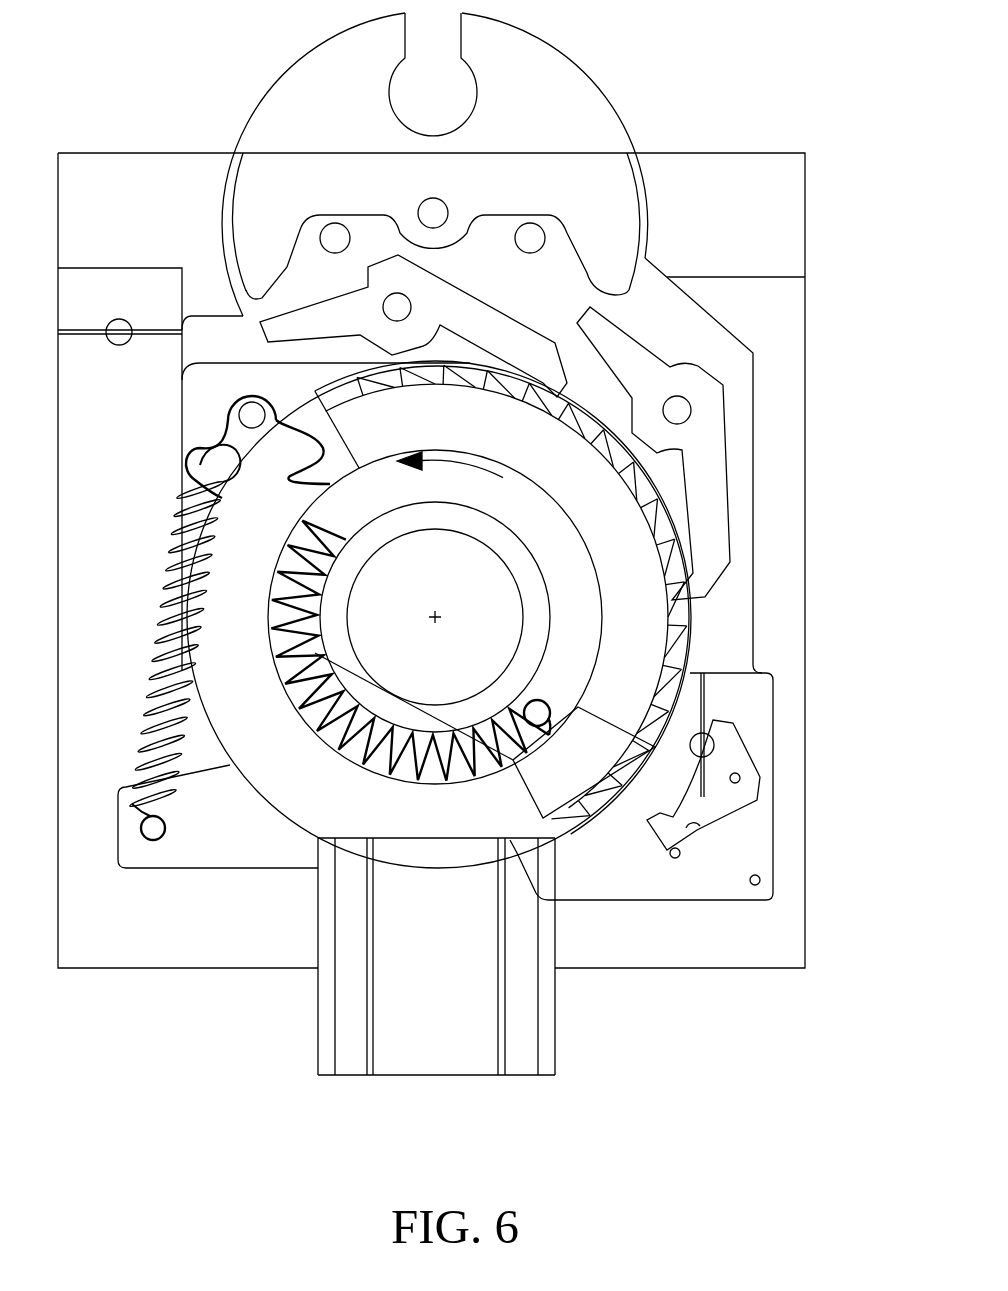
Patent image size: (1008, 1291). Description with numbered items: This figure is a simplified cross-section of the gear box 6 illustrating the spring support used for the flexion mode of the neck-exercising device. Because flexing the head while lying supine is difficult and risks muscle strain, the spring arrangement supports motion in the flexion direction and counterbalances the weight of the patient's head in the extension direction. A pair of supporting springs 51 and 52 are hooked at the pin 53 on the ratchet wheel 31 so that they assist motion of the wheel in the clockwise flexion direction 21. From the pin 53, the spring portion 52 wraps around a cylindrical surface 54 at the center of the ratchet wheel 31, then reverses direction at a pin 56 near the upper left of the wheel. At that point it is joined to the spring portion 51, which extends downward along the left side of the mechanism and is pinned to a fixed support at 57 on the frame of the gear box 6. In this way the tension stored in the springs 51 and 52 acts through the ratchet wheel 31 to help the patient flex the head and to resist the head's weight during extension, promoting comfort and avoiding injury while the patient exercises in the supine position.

The gear box 6 is at (805, 487).
The clockwise flexion direction 21 is at (523, 467).
The ratchet wheel 31 is at (615, 617).
The supporting spring 51 is at (172, 524).
The supporting spring portion 52 is at (322, 735).
The pin 53 is at (553, 703).
The cylindrical surface 54 is at (396, 502).
The pin 56 is at (252, 410).
The fixed support 57 is at (155, 842).